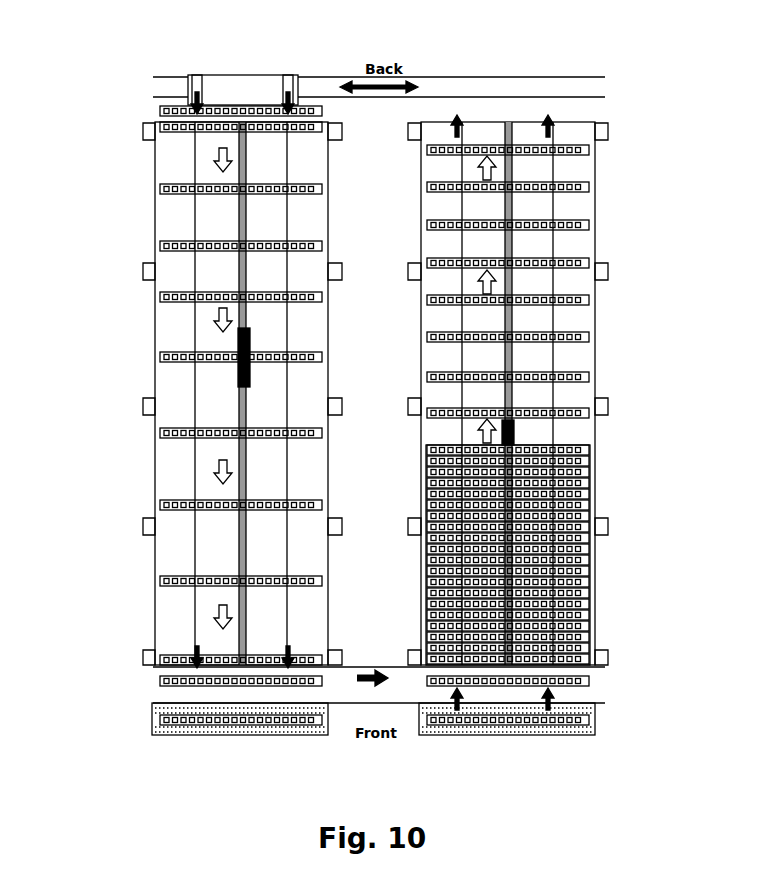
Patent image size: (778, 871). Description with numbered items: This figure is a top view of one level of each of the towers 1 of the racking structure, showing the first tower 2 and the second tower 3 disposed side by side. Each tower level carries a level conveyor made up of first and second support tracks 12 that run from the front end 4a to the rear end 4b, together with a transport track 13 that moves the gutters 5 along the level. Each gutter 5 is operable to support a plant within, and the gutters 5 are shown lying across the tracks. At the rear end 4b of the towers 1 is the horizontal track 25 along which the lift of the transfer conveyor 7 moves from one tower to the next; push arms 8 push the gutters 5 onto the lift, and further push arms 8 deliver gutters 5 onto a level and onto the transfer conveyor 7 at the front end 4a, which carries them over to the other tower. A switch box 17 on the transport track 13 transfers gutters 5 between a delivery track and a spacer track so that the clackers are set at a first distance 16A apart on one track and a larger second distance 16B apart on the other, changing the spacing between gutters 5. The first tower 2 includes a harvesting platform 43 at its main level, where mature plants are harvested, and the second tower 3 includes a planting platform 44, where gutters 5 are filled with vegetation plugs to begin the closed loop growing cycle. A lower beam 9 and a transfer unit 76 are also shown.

The plurality of towers 1 is at (248, 797).
The first tower 2 is at (156, 748).
The second tower 3 is at (556, 770).
The front end 4a is at (375, 742).
The rear end 4b is at (382, 48).
The gutter 5 is at (163, 112).
The transfer conveyor 7 is at (592, 694).
The push arms 8 is at (197, 92).
The lower beam 9 is at (598, 655).
The support track 12 is at (195, 395).
The transport track 13 is at (507, 398).
The first distance 16A is at (568, 590).
The second distance 16B is at (162, 218).
The switch box 17 is at (238, 337).
The horizontal track 25 is at (490, 97).
The harvesting platform 43 is at (290, 735).
The planting platform 44 is at (493, 735).
The transfer unit 76 is at (243, 85).